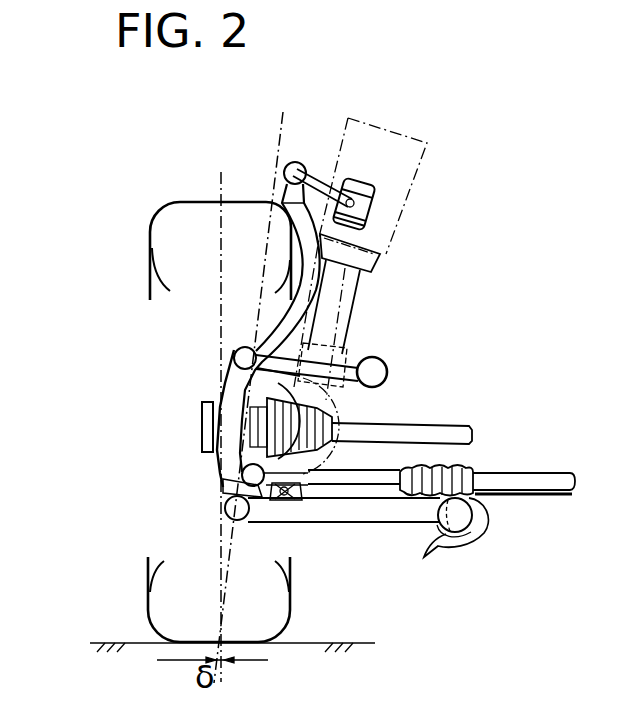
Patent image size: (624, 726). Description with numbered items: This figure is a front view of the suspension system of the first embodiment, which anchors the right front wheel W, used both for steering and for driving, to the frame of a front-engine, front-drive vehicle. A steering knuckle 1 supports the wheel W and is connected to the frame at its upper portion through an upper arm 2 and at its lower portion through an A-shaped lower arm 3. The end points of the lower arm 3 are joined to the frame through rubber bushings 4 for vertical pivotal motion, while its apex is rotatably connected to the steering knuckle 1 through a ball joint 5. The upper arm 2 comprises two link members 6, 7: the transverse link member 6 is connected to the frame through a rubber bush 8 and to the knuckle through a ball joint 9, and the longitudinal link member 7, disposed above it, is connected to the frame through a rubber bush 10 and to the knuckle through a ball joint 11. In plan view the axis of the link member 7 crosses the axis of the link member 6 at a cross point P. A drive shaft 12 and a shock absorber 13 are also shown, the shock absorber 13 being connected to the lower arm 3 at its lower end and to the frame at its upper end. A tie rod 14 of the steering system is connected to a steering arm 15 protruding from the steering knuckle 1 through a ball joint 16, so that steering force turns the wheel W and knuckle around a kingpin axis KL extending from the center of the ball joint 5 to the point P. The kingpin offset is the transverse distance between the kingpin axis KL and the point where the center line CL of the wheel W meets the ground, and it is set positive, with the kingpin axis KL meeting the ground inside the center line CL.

The steering knuckle 1 is at (245, 394).
The upper arm 2 is at (394, 306).
The lower arm 3 is at (360, 522).
The rubber bushing 4 is at (448, 532).
The ball joint 5 is at (225, 510).
The link member 6 is at (325, 355).
The link member 7 is at (378, 212).
The rubber bush 8 is at (388, 371).
The ball joint 9 is at (236, 350).
The rubber bush 10 is at (372, 172).
The ball joint 11 is at (288, 171).
The drive shaft 12 is at (420, 424).
The shock absorber 13 is at (423, 180).
The tie rod 14 is at (340, 476).
The steering arm 15 is at (222, 488).
The ball joint 16 is at (242, 470).
The front wheel W is at (150, 237).
The cross point P is at (283, 160).
The kingpin axis KL is at (279, 133).
The center line CL is at (221, 182).